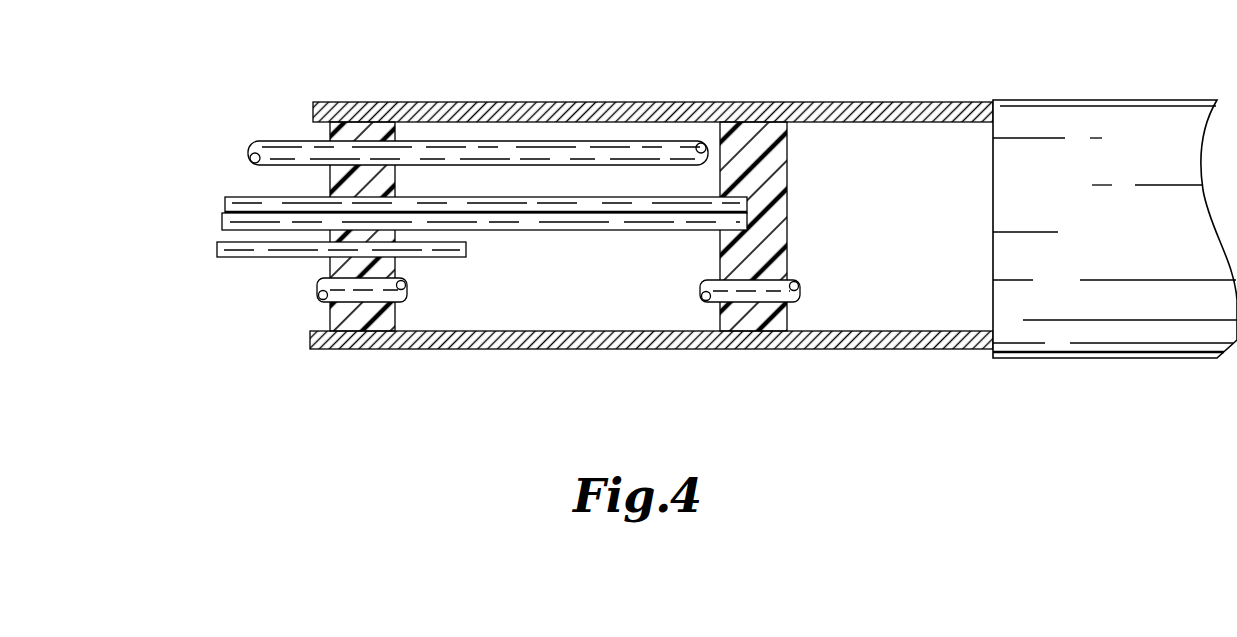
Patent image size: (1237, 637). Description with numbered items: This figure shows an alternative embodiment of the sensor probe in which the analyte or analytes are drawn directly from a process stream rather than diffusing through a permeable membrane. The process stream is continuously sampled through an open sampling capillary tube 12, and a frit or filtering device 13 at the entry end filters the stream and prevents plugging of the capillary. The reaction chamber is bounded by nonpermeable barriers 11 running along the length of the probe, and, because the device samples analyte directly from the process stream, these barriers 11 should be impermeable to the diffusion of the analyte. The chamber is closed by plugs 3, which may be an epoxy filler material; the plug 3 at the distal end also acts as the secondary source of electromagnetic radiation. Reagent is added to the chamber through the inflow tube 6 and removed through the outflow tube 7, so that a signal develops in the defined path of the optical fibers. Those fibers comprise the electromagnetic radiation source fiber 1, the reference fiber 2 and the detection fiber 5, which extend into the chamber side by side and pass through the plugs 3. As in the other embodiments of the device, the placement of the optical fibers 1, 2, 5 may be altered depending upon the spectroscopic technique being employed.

The electromagnetic radiation source fiber 1 is at (238, 258).
The reference fiber 2 is at (236, 200).
The translucent material 3 is at (362, 323).
The detection fiber 5 is at (238, 213).
The inflow tube 6 is at (303, 147).
The outflow tube 7 is at (404, 288).
The nonpermeable barrier 11 is at (747, 105).
The sampling capillary tube 12 is at (800, 290).
The frit or filtering device 13 is at (1092, 112).